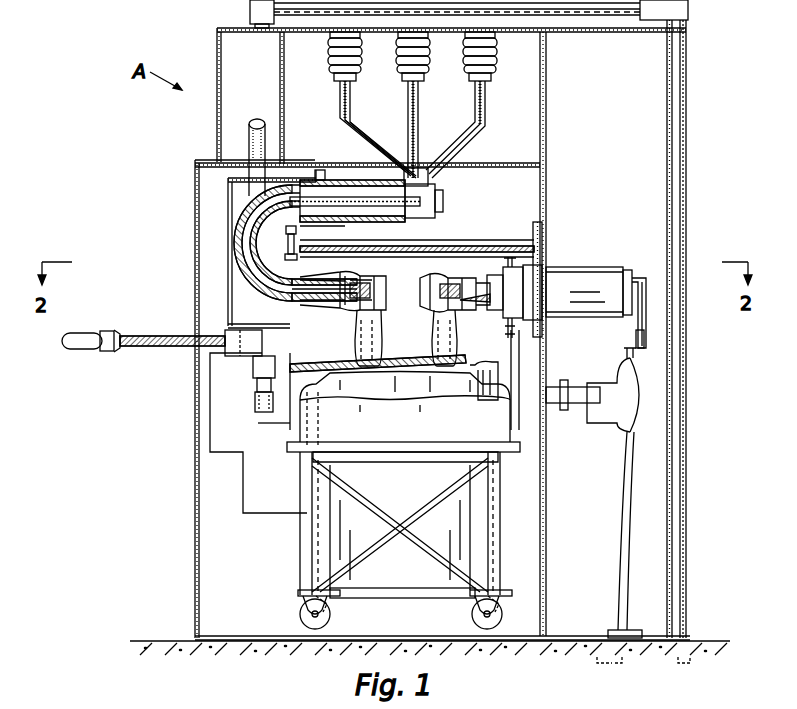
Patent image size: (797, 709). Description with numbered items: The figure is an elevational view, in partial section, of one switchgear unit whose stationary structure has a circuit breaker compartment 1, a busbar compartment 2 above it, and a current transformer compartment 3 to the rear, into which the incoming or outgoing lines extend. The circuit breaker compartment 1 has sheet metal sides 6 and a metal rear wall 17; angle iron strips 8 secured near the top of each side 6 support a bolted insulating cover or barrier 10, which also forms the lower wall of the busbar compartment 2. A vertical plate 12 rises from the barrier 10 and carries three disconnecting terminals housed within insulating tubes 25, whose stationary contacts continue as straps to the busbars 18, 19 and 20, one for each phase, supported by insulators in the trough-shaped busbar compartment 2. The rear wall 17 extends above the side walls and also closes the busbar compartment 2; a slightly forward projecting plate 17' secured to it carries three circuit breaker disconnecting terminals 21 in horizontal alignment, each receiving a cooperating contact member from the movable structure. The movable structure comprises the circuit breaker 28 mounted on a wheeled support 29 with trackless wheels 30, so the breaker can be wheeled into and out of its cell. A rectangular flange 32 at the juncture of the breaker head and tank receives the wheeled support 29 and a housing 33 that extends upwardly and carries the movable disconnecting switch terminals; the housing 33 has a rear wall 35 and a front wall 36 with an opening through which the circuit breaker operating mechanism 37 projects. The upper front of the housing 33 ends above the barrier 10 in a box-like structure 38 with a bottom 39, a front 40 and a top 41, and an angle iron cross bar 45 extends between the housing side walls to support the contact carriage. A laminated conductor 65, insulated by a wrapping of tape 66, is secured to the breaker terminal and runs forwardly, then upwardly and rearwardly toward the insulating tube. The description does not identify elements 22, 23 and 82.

The circuit breaker compartment 1 is at (215, 540).
The busbar compartment 2 is at (529, 131).
The current transformer compartment 3 is at (655, 371).
The sheet metal side 6 is at (528, 186).
The angle iron strip 8 is at (480, 251).
The insulating cover or barrier 10 is at (433, 250).
The vertical plate 12 is at (312, 176).
The rear wall 17 is at (564, 483).
The forward projecting plate 17' is at (522, 274).
The busbar 18 is at (350, 103).
The busbar 19 is at (420, 103).
The busbar 20 is at (487, 103).
The circuit breaker disconnecting terminal 21 is at (576, 272).
The motor bracket 22 is at (637, 312).
The wheel / support foot 23 is at (632, 410).
The insulating tube 25 is at (347, 180).
The circuit breaker 28 is at (335, 532).
The wheeled support 29 is at (490, 569).
The wheel 30 is at (305, 616).
The rectangular flange 32 is at (495, 453).
The housing 33 is at (290, 440).
The rear wall 35 is at (512, 378).
The front wall 36 is at (297, 340).
The circuit breaker operating mechanism 37 is at (218, 417).
The box-like structure 38 is at (240, 197).
The bottom 39 is at (238, 330).
The front 40 is at (238, 233).
The top 41 is at (240, 178).
The angle iron cross bar 45 is at (291, 240).
The laminated conductor 65 is at (326, 296).
The insulating tape wrapping 66 is at (306, 292).
The conductor tubes 82 is at (405, 148).